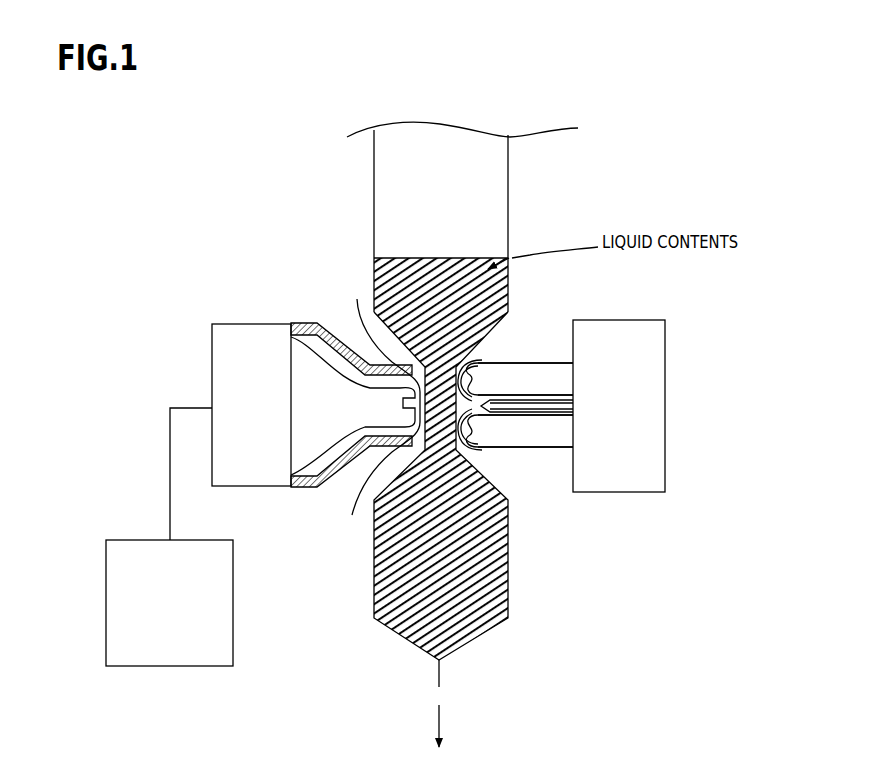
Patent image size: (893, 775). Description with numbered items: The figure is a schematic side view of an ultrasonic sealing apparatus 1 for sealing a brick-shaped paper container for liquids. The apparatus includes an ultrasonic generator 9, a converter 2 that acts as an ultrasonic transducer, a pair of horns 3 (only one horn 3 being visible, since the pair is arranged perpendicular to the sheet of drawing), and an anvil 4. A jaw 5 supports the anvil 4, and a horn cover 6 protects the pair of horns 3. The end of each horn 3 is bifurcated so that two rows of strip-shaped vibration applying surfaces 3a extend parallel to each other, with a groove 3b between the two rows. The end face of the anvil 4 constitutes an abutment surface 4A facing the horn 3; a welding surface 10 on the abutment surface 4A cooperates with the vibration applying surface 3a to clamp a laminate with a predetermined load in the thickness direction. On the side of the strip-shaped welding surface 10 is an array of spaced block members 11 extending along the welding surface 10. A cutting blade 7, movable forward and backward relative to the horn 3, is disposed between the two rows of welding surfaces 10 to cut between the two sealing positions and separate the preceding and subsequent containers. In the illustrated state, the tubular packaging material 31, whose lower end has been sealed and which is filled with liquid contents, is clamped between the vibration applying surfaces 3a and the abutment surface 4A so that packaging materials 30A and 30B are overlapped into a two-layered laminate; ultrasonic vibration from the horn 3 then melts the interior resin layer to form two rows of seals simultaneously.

The ultrasonic sealing apparatus 1 is at (258, 232).
The converter 2 is at (247, 423).
The horn 3 is at (312, 427).
The vibration applying surface 3a is at (380, 404).
The groove 3b is at (402, 391).
The anvil 4 is at (568, 427).
The abutment surface 4A is at (480, 363).
The jaw 5 is at (652, 350).
The horn cover 6 is at (349, 347).
The cutting blade 7 is at (545, 405).
The ultrasonic generator 9 is at (208, 632).
The welding surface 10 is at (470, 360).
The block member 11 is at (478, 364).
The packaging material 30A is at (373, 178).
The packaging material 30B is at (510, 210).
The tubular packaging material 31 is at (514, 170).